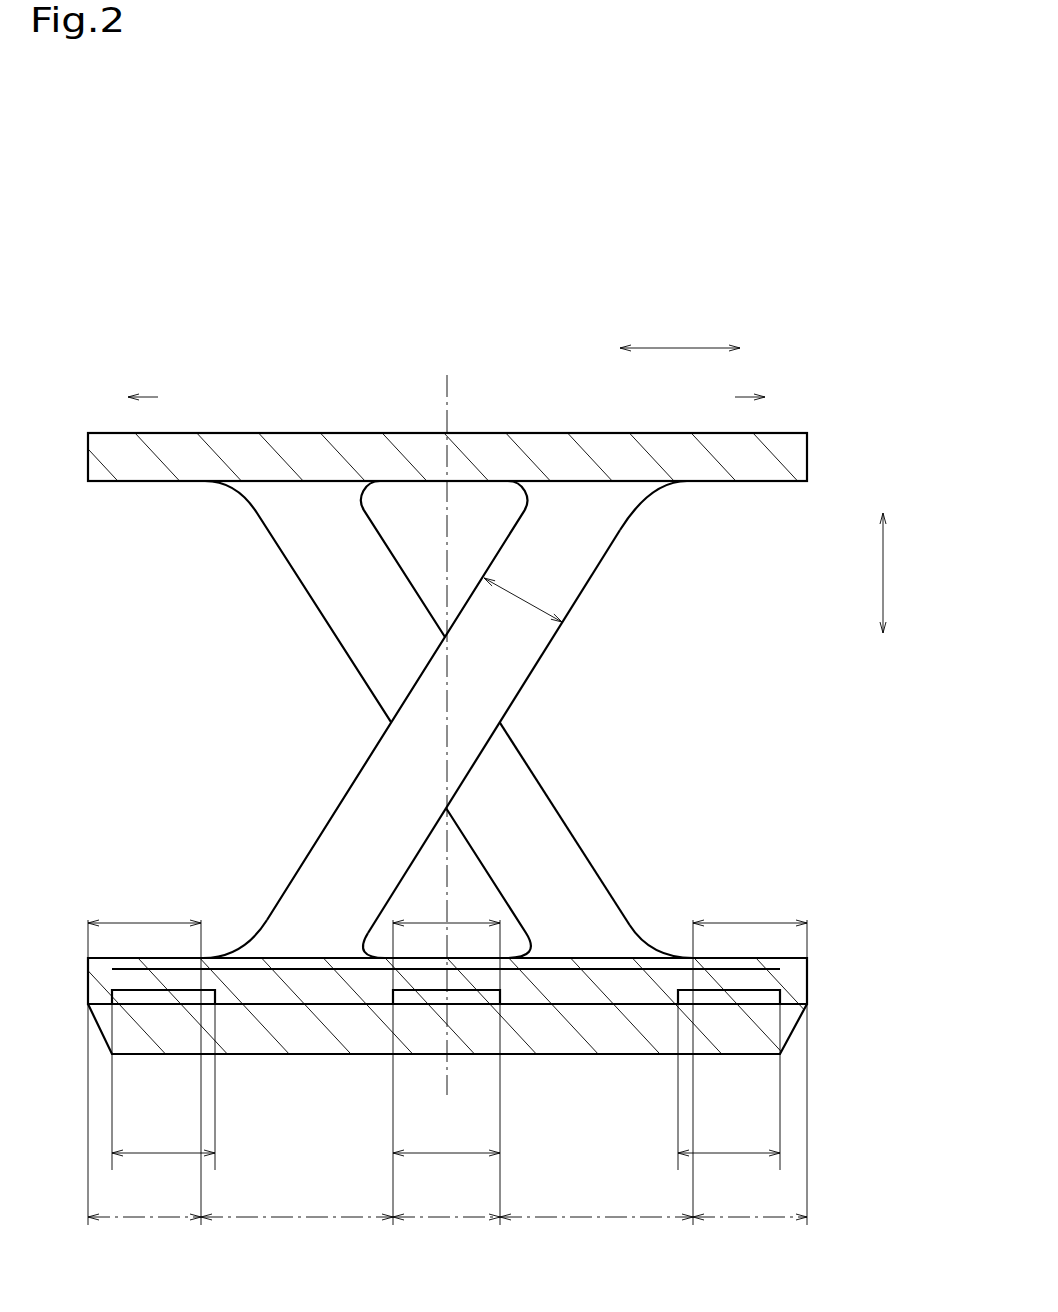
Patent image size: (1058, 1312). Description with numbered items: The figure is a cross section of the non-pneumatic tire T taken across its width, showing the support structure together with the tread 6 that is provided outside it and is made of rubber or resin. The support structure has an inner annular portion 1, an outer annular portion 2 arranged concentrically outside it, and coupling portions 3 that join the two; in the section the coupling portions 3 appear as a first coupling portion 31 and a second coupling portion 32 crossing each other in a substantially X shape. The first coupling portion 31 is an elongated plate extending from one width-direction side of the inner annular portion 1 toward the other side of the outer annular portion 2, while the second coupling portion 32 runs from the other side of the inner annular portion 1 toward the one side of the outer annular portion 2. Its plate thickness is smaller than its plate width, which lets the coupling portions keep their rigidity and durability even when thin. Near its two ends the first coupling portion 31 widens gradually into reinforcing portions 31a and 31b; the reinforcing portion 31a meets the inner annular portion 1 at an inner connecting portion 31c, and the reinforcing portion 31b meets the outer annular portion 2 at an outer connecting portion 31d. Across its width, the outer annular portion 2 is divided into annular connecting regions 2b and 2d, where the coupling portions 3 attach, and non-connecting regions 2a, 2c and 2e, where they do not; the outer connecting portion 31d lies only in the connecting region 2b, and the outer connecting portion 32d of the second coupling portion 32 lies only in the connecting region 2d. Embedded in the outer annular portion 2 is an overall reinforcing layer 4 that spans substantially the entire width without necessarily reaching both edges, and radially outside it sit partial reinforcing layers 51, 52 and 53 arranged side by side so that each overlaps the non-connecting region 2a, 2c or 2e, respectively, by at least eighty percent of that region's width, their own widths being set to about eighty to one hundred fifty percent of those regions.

The non-pneumatic tire T is at (325, 347).
The inner annular portion 1 is at (807, 458).
The outer annular portion 2 is at (807, 983).
The coupling portions 3 is at (414, 719).
The first coupling portion 31 is at (310, 843).
The second coupling portion 32 is at (580, 847).
The reinforcing portion 31a is at (657, 493).
The reinforcing portion 31b is at (243, 940).
The inner connecting portion 31c is at (590, 483).
The outer connecting portion 31d is at (307, 957).
The outer connecting portion 32d is at (587, 957).
The overall reinforcing layer 4 is at (753, 967).
The tread 6 is at (797, 1027).
The partial reinforcing layer 51 is at (143, 990).
The partial reinforcing layer 52 is at (425, 990).
The partial reinforcing layer 53 is at (752, 990).
The non-connecting region 2a is at (144, 1235).
The connecting region 2b is at (297, 1235).
The non-connecting region 2c is at (446, 1235).
The connecting region 2d is at (596, 1235).
The non-connecting region 2e is at (750, 1235).